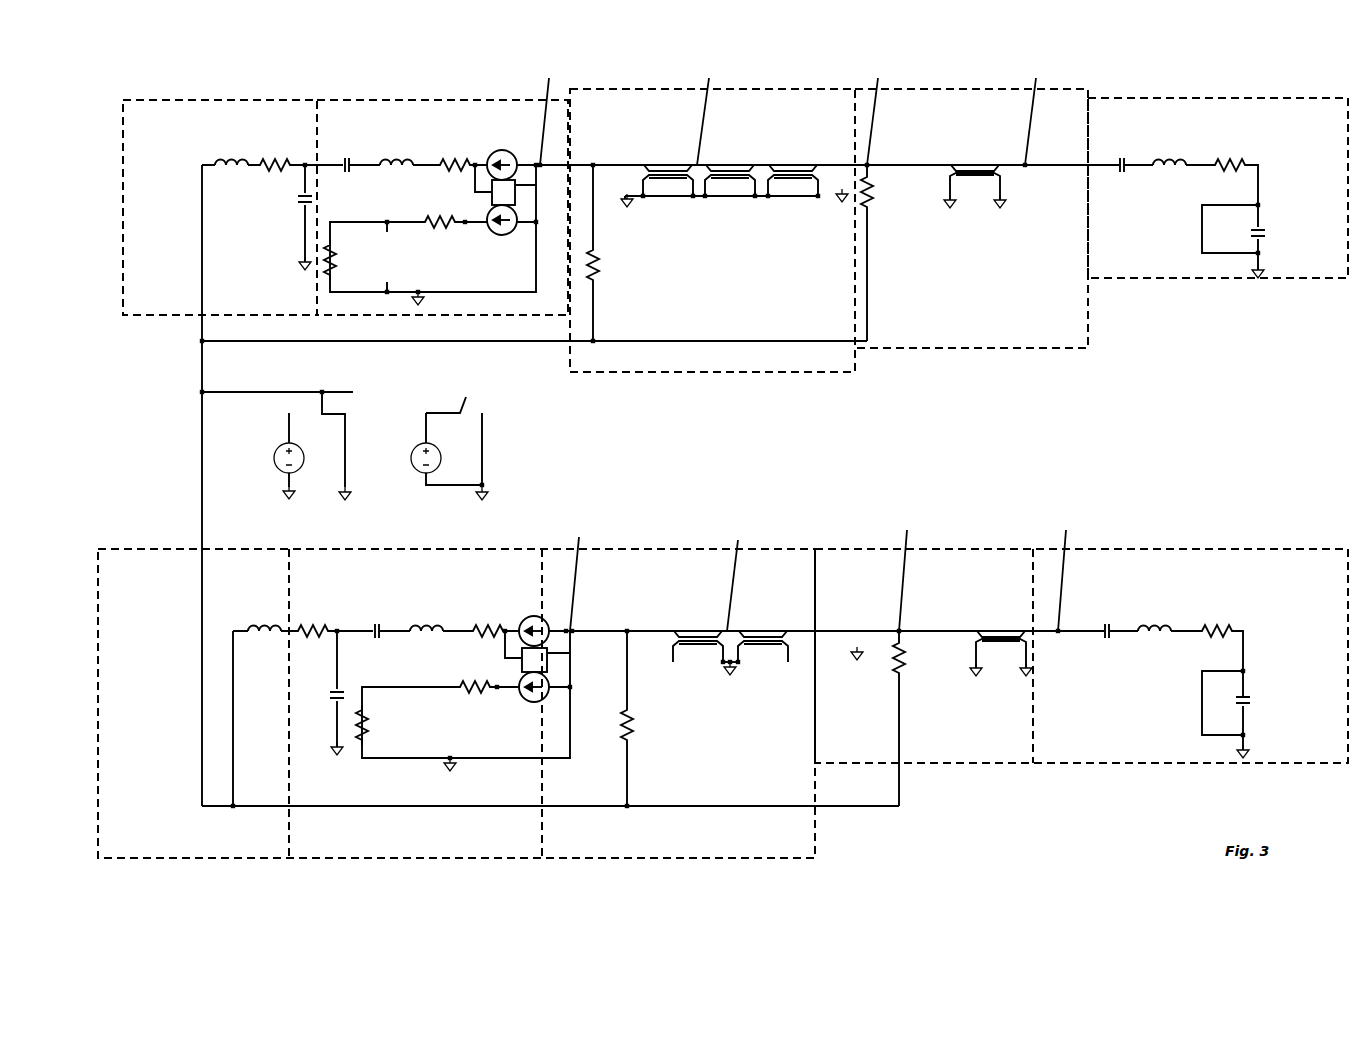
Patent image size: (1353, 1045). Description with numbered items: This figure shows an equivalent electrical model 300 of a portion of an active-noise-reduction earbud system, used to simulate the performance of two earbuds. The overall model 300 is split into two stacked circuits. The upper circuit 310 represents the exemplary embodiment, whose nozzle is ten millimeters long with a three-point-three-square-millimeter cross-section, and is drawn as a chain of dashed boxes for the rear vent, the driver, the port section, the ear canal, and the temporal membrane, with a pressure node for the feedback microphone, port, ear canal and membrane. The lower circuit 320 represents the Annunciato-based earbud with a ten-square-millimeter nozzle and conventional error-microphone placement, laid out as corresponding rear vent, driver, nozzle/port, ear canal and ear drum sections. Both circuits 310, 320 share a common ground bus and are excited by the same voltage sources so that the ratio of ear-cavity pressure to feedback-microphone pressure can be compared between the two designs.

The acoustic model circuit 300 is at (158, 76).
The upper acoustic model (driver, port, ear canal, membrane) 310 is at (113, 152).
The lower acoustic model (ANR driver, nozzle/port, ear canal, ear drum) 320 is at (160, 514).